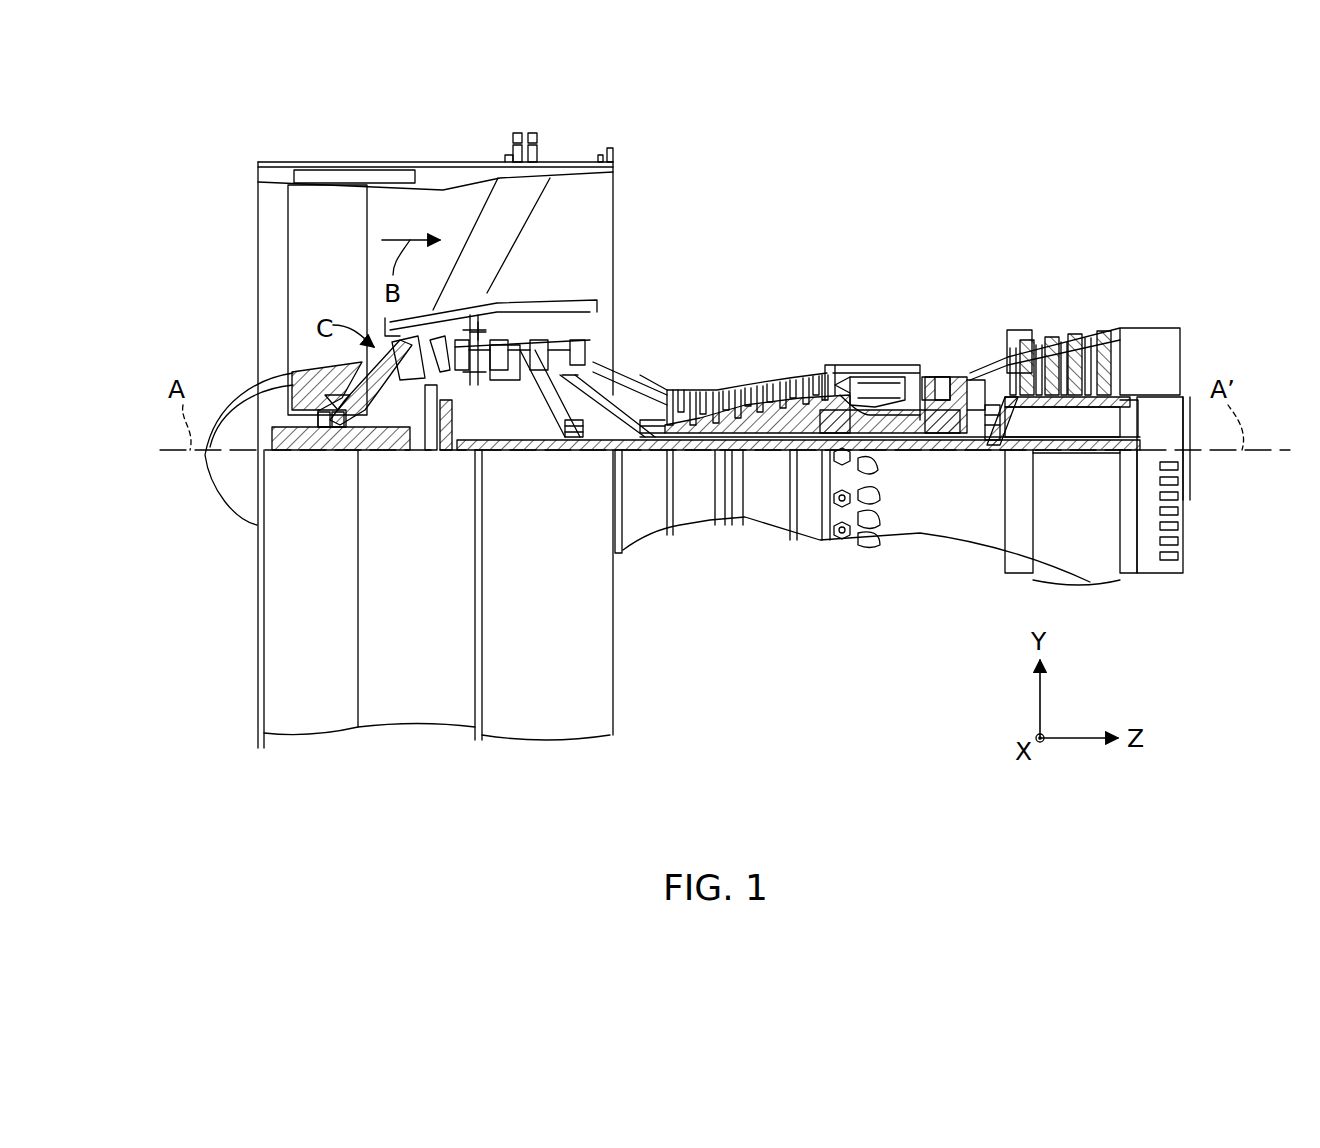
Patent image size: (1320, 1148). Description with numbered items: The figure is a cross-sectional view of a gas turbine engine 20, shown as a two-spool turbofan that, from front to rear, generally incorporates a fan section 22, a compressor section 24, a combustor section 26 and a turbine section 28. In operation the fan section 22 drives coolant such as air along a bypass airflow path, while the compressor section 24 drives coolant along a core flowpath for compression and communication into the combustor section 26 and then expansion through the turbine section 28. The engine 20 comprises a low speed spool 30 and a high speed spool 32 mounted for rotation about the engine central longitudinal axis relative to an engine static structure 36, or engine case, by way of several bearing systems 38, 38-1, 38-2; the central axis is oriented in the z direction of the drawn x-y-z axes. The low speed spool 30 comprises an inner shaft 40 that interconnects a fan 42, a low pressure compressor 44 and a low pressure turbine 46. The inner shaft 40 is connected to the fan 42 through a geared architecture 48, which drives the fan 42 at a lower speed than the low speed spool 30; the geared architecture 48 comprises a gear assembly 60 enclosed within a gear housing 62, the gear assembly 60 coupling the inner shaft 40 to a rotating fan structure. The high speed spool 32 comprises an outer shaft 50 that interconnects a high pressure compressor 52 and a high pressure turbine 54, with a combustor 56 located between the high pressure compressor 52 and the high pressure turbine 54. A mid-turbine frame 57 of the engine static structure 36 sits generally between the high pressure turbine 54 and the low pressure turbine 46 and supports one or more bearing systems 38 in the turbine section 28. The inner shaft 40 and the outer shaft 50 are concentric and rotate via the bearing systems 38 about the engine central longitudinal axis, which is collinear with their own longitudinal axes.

The gas turbine engine 20 is at (924, 160).
The fan section 22 is at (458, 148).
The compressor section 24 is at (830, 262).
The combustor section 26 is at (928, 262).
The turbine section 28 is at (1125, 262).
The low speed spool 30 is at (770, 462).
The high speed spool 32 is at (810, 405).
The engine static structure 36 is at (810, 515).
The bearing system 38 is at (985, 430).
The bearing system 38-1 is at (330, 432).
The bearing system 38-2 is at (565, 437).
The inner shaft 40 is at (636, 453).
The fan 42 is at (385, 462).
The low pressure compressor 44 is at (550, 355).
The low pressure turbine 46 is at (1090, 330).
The geared architecture 48 is at (433, 480).
The outer shaft 50 is at (878, 440).
The high pressure compressor 52 is at (765, 388).
The high pressure turbine 54 is at (945, 377).
The combustor 56 is at (883, 375).
The mid-turbine frame 57 is at (983, 363).
The gear assembly 60 is at (455, 418).
The gear housing 62 is at (455, 394).